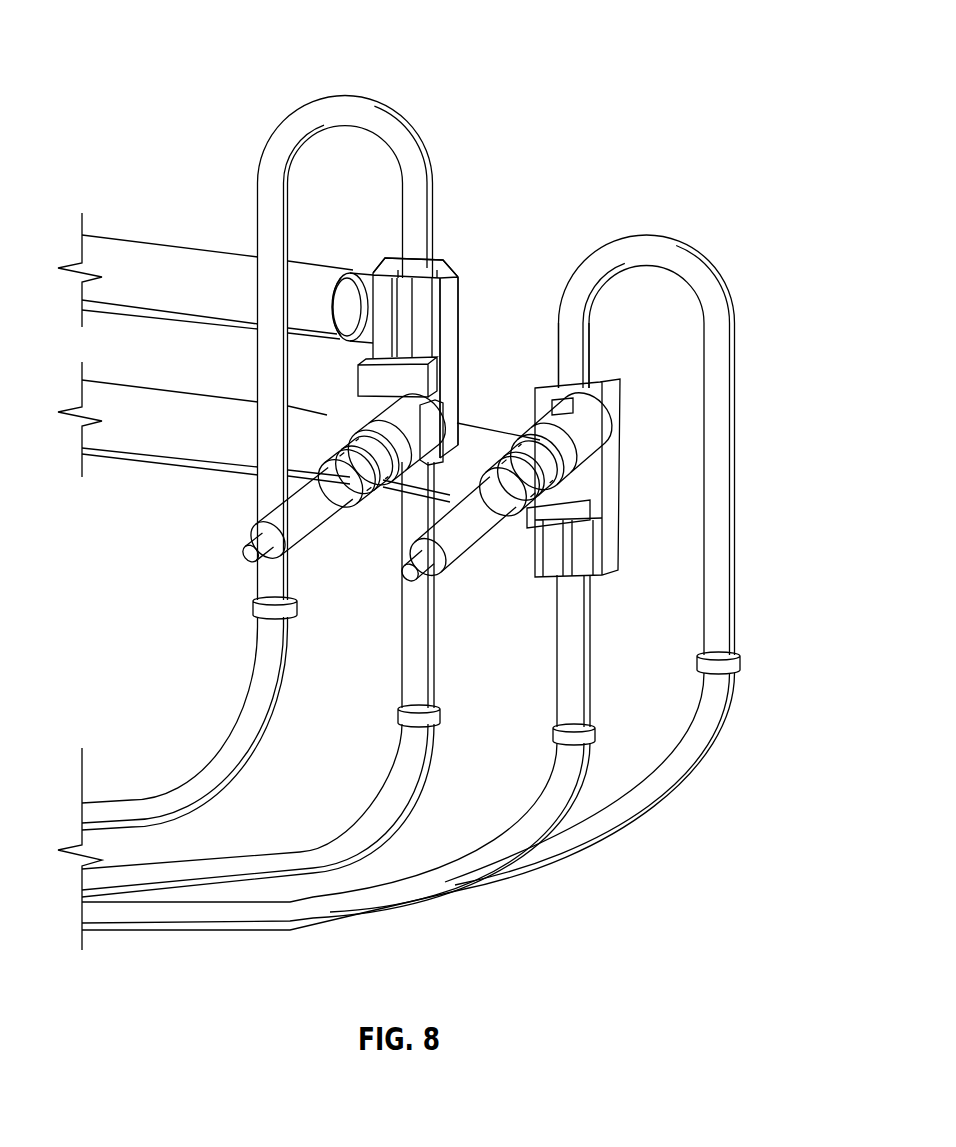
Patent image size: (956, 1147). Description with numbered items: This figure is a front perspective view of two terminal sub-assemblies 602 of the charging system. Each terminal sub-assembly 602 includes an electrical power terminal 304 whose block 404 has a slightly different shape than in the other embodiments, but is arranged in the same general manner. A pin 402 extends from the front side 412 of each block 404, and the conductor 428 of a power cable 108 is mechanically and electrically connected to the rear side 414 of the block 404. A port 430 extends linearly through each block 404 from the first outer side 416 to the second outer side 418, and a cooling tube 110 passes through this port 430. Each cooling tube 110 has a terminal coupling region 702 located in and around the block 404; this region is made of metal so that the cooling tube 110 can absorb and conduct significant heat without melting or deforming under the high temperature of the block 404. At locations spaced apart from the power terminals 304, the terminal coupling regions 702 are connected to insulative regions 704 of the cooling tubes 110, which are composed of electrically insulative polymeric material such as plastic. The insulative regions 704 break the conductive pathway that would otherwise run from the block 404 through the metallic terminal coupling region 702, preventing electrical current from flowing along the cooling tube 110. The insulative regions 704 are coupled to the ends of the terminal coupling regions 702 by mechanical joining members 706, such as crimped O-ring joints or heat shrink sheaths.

The power cable 108 is at (152, 258).
The cooling tube 110 is at (280, 138).
The electrical power terminal 304 is at (452, 356).
The pin 402 is at (262, 548).
The block 404 is at (455, 328).
The front side 412 is at (440, 384).
The rear side 414 is at (463, 290).
The first outer side 416 is at (448, 262).
The second outer side 418 is at (455, 452).
The conductor 428 is at (365, 298).
The port 430 is at (420, 258).
The terminal sub-assembly 602 is at (506, 372).
The terminal coupling region 702 is at (403, 137).
The insulative region 704 is at (145, 798).
The mechanical joining member 706 is at (252, 608).